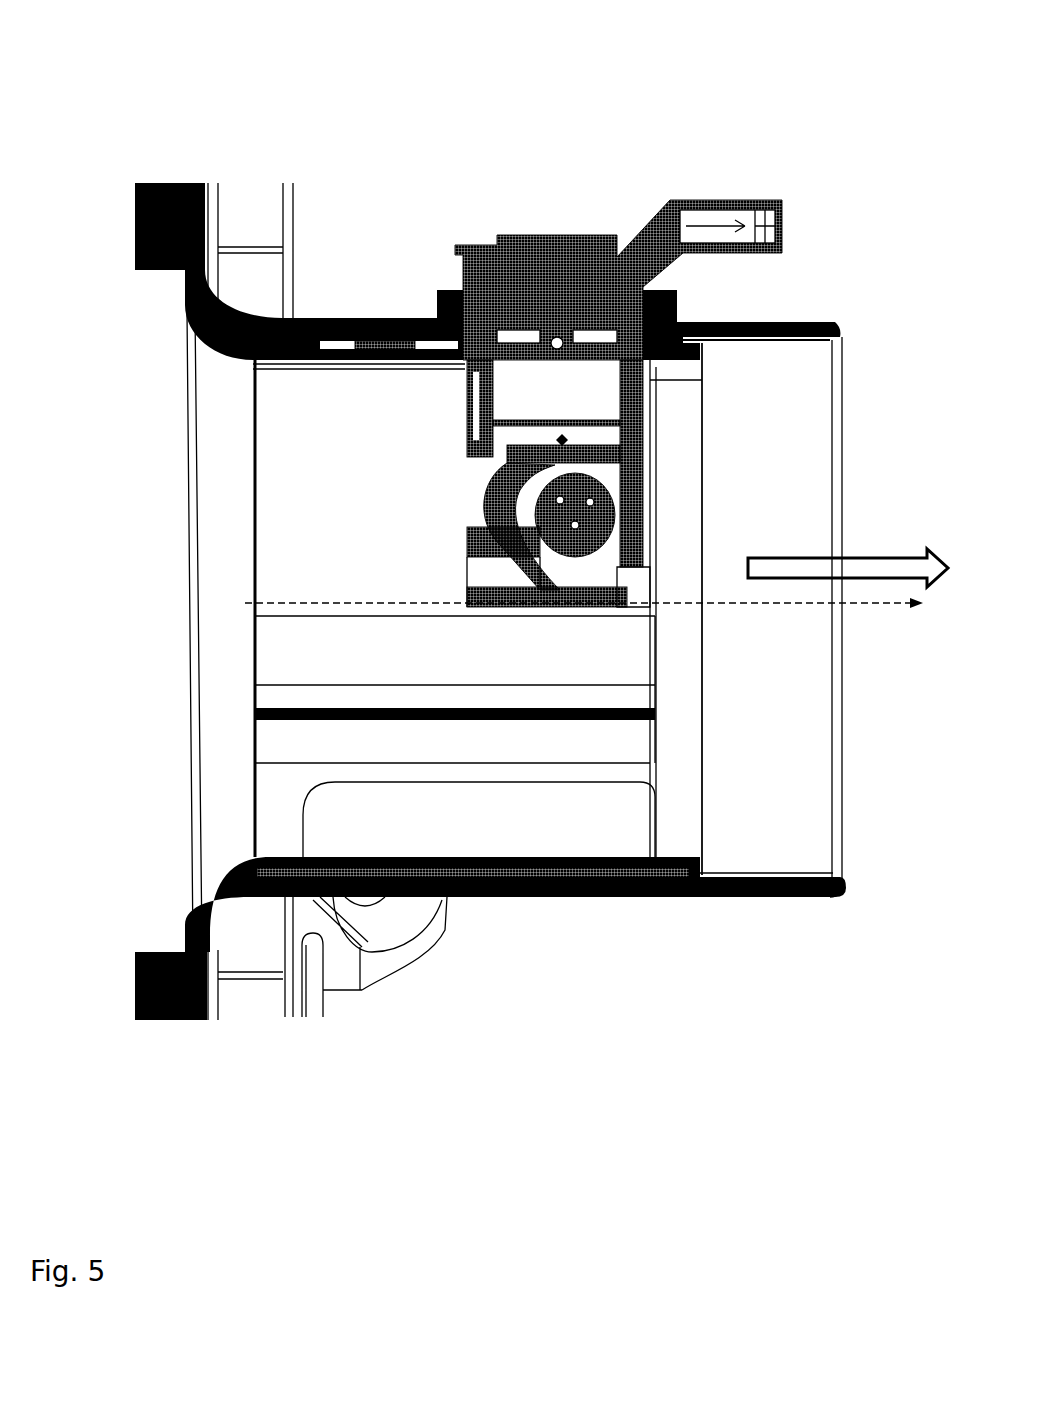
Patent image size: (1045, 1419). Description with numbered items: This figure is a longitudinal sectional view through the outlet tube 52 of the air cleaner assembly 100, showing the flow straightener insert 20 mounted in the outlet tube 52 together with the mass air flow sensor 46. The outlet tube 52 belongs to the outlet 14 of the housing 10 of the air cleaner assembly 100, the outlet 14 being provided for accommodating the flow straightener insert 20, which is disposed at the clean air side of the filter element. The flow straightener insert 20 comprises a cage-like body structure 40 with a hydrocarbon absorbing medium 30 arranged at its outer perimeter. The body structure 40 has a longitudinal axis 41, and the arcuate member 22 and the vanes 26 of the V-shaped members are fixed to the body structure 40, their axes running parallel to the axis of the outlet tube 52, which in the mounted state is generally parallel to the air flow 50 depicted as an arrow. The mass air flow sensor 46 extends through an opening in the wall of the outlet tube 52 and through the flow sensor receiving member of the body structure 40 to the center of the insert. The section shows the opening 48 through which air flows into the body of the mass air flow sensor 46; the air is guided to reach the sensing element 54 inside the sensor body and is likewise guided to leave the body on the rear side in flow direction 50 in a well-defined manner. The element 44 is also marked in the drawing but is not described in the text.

The air cleaner assembly 100 is at (776, 100).
The housing 10 is at (222, 183).
The outlet 14 is at (362, 317).
The outlet tube 52 is at (410, 317).
The mass air flow sensor 46 is at (604, 257).
The sensing element 54 is at (722, 416).
The opening 48 is at (470, 577).
The flow straightener insert 20 is at (703, 468).
The body structure 40 is at (688, 787).
The arcuate member 22 is at (642, 613).
The vanes 26 is at (568, 712).
The hydrocarbon absorbing medium 30 is at (310, 460).
The longitudinal axis 41 is at (877, 606).
The air flow 50 is at (910, 556).
The housing end 44 is at (834, 897).